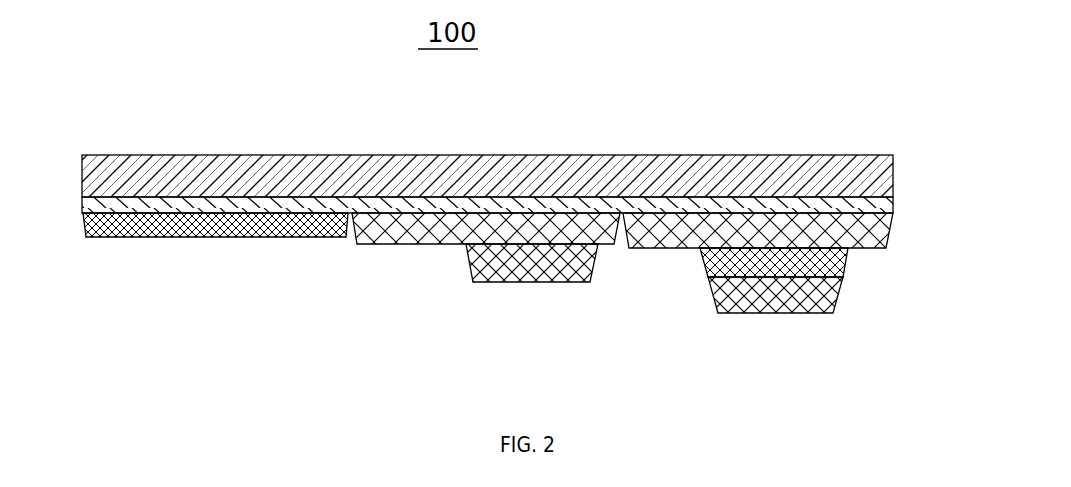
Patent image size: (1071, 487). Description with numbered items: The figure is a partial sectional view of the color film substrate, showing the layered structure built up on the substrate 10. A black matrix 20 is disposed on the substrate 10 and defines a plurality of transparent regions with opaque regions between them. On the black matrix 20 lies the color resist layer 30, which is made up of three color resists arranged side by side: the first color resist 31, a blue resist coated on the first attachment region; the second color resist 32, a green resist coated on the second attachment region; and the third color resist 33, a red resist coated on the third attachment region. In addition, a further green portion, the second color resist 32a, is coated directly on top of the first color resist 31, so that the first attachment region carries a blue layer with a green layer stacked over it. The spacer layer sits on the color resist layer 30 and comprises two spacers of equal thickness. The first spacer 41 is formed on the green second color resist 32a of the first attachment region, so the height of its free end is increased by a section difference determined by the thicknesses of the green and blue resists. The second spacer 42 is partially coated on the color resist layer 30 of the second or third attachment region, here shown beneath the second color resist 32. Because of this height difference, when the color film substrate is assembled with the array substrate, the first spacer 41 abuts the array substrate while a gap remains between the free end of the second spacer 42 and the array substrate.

The substrate 10 is at (845, 156).
The black matrix 20 is at (872, 201).
The color resist layer 30 is at (283, 218).
The first color resist 31 is at (860, 234).
The second color resist 32 is at (391, 247).
The second color resist 32a is at (842, 262).
The third color resist 33 is at (126, 218).
The first spacer 41 is at (797, 302).
The second spacer 42 is at (524, 255).